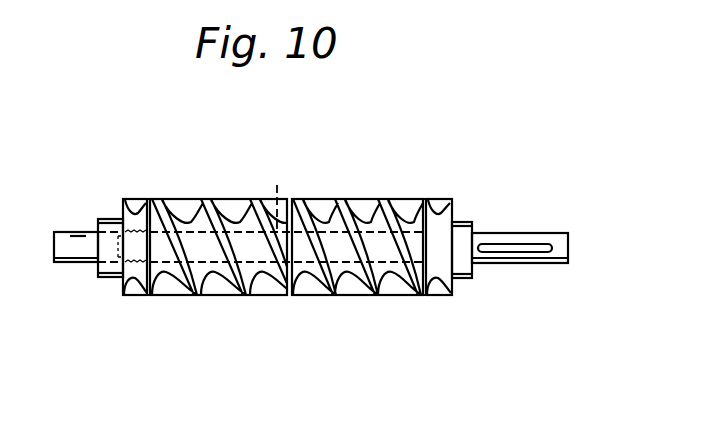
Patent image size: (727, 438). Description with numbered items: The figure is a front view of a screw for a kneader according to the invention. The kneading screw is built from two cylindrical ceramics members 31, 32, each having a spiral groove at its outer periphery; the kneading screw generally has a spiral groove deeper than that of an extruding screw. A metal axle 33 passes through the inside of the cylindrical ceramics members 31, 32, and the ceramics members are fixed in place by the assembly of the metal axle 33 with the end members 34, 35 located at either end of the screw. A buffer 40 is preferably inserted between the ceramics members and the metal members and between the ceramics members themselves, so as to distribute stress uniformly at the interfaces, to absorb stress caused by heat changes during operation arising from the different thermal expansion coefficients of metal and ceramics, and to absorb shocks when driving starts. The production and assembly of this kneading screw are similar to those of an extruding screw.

The cylindrical ceramics member 31 is at (227, 213).
The cylindrical ceramics member 32 is at (369, 213).
The metal axle 33 is at (336, 252).
The end member 34 is at (131, 290).
The end member 35 is at (440, 288).
The buffer 40 is at (277, 186).